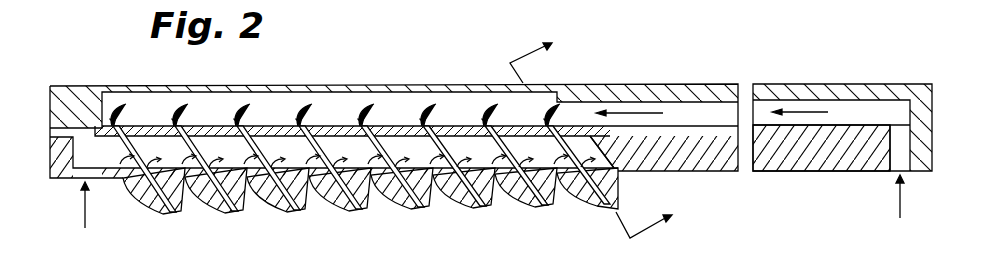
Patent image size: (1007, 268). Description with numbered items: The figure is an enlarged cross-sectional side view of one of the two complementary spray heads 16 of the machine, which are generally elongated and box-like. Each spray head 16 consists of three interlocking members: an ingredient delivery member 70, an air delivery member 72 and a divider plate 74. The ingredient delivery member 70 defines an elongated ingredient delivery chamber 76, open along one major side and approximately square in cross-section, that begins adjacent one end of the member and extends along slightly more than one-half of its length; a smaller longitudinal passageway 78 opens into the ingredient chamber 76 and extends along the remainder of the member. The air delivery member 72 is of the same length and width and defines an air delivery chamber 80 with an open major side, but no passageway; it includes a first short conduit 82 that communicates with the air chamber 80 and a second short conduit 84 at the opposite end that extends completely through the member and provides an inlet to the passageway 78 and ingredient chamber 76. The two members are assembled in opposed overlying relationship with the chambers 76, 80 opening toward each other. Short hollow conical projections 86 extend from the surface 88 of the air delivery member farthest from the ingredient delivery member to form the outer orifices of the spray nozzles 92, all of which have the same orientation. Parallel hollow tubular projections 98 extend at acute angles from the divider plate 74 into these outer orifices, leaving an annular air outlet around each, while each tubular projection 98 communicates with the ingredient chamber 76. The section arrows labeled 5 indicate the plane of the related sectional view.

The spray head 16 is at (345, 44).
The ingredient delivery member 70 is at (789, 82).
The air delivery member 72 is at (805, 163).
The divider plate 74 is at (343, 128).
The ingredient delivery chamber 76 is at (205, 104).
The longitudinal passageway 78 is at (686, 106).
The air delivery chamber 80 is at (248, 206).
The first short conduit 82 is at (82, 178).
The second short conduit 84 is at (898, 146).
The hollow conical projection 86 is at (158, 208).
The surface of the air delivery member 88 is at (714, 172).
The spray nozzle 92 is at (302, 212).
The tubular projection 98 is at (182, 218).
The section line 5- 5 is at (601, 135).